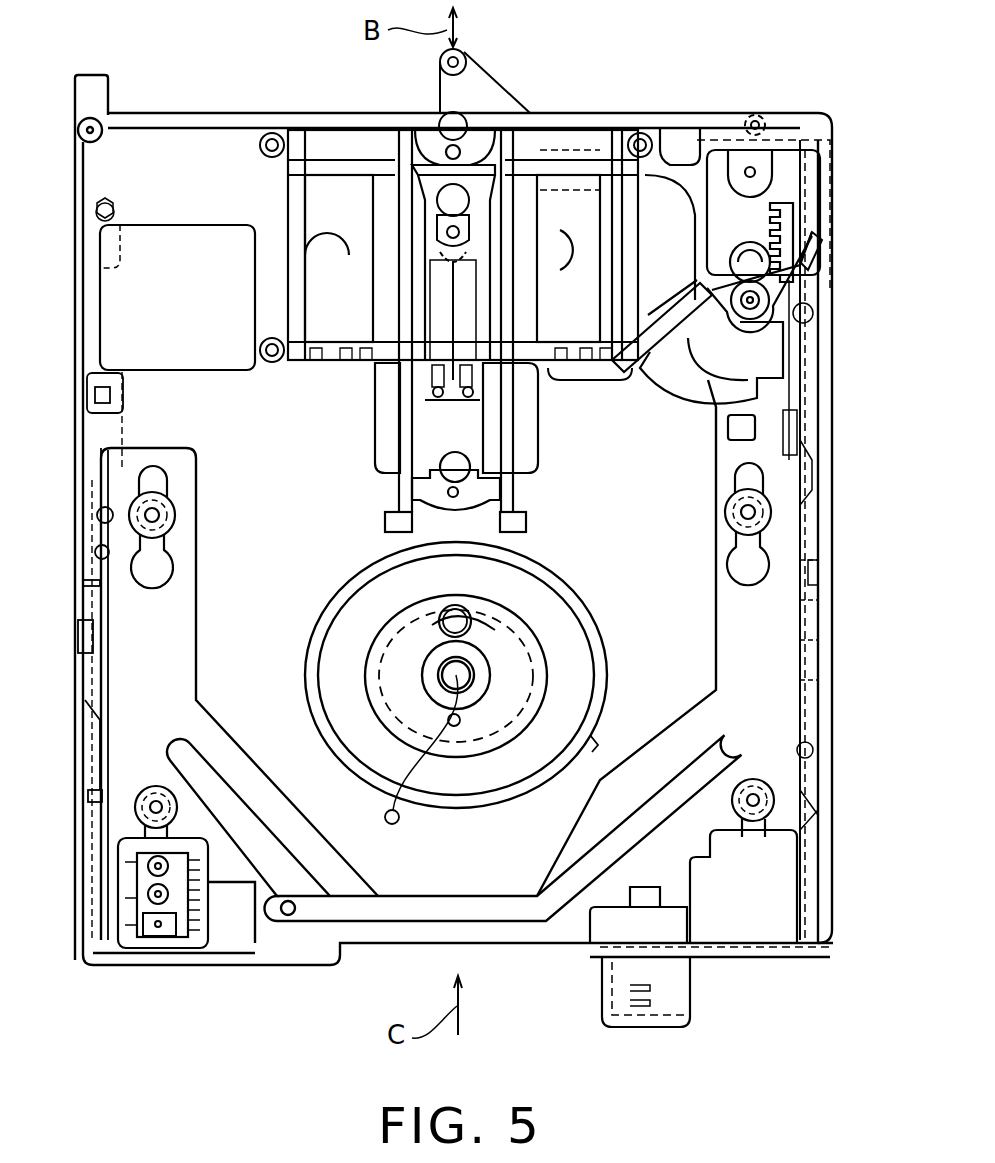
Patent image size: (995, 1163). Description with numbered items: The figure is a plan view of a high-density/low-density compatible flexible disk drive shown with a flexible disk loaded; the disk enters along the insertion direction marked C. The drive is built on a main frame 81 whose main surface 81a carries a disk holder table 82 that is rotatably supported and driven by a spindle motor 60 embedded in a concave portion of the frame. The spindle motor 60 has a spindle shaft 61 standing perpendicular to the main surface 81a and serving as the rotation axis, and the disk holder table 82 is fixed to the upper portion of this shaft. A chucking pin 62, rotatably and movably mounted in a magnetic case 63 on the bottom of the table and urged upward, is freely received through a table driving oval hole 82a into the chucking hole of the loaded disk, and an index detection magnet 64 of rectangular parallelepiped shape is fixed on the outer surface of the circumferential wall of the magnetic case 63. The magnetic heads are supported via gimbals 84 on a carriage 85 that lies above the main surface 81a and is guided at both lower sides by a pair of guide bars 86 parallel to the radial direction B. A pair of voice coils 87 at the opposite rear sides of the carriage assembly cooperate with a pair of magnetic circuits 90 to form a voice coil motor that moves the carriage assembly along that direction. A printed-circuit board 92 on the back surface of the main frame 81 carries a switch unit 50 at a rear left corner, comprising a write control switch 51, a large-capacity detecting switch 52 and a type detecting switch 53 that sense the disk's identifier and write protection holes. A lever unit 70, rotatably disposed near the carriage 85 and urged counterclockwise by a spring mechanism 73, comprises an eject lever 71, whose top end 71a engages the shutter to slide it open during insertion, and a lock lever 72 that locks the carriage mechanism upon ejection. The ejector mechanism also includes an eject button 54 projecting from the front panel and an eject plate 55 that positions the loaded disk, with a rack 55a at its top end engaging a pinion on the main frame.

The switch unit 50 is at (180, 932).
The write control switch 51 is at (158, 928).
The large-capacity detecting switch 52 is at (148, 895).
The type detecting switch 53 is at (148, 868).
The eject button 54 is at (698, 996).
The eject plate 55 is at (782, 665).
The rack 55a is at (792, 222).
The spindle motor 60 is at (297, 675).
The spindle shaft 61 is at (473, 667).
The chucking pin 62 is at (470, 614).
The magnetic case 63 is at (598, 698).
The index detection magnet 64 is at (590, 748).
The lever unit 70 is at (678, 402).
The eject lever 71 is at (666, 358).
The top end of eject lever 71a is at (562, 338).
The lock lever 72 is at (680, 138).
The spring mechanism 73 is at (727, 325).
The main frame 81 is at (250, 967).
The main surface 81a is at (258, 651).
The disk holder table 82 is at (533, 637).
The table driving oval hole 82a is at (440, 610).
The gimbals 84 is at (466, 445).
The carriage 85 is at (480, 398).
The guide bars 86 is at (382, 446).
The voice coils 87 is at (289, 248).
The magnetic circuits 90 is at (316, 366).
The printed-circuit board 92 is at (206, 301).